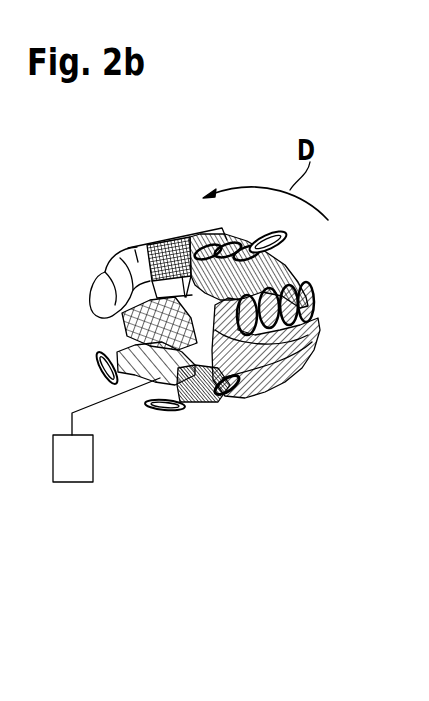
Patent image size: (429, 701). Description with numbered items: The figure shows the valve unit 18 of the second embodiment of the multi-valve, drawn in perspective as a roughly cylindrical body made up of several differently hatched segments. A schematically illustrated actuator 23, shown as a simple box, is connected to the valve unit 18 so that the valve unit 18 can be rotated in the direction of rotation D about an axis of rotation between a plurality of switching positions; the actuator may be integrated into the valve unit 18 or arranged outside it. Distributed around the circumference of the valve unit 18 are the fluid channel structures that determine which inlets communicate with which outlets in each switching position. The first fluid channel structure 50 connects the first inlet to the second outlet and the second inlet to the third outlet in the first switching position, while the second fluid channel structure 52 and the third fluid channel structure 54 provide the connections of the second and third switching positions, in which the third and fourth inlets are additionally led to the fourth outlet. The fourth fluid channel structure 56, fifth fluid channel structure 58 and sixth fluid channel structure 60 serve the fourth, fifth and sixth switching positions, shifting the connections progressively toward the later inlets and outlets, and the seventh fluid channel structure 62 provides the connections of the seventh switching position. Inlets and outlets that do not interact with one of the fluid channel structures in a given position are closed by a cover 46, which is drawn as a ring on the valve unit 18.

The valve unit 18 is at (282, 390).
The actuator 23 is at (72, 482).
The cover 46 is at (150, 403).
The first fluid channel structure 50 is at (170, 237).
The second fluid channel structure 52 is at (293, 268).
The third fluid channel structure 54 is at (300, 348).
The fourth fluid channel structure 56 is at (210, 403).
The fifth fluid channel structure 58 is at (140, 380).
The sixth fluid channel structure 60 is at (125, 330).
The seventh fluid channel structure 62 is at (128, 248).